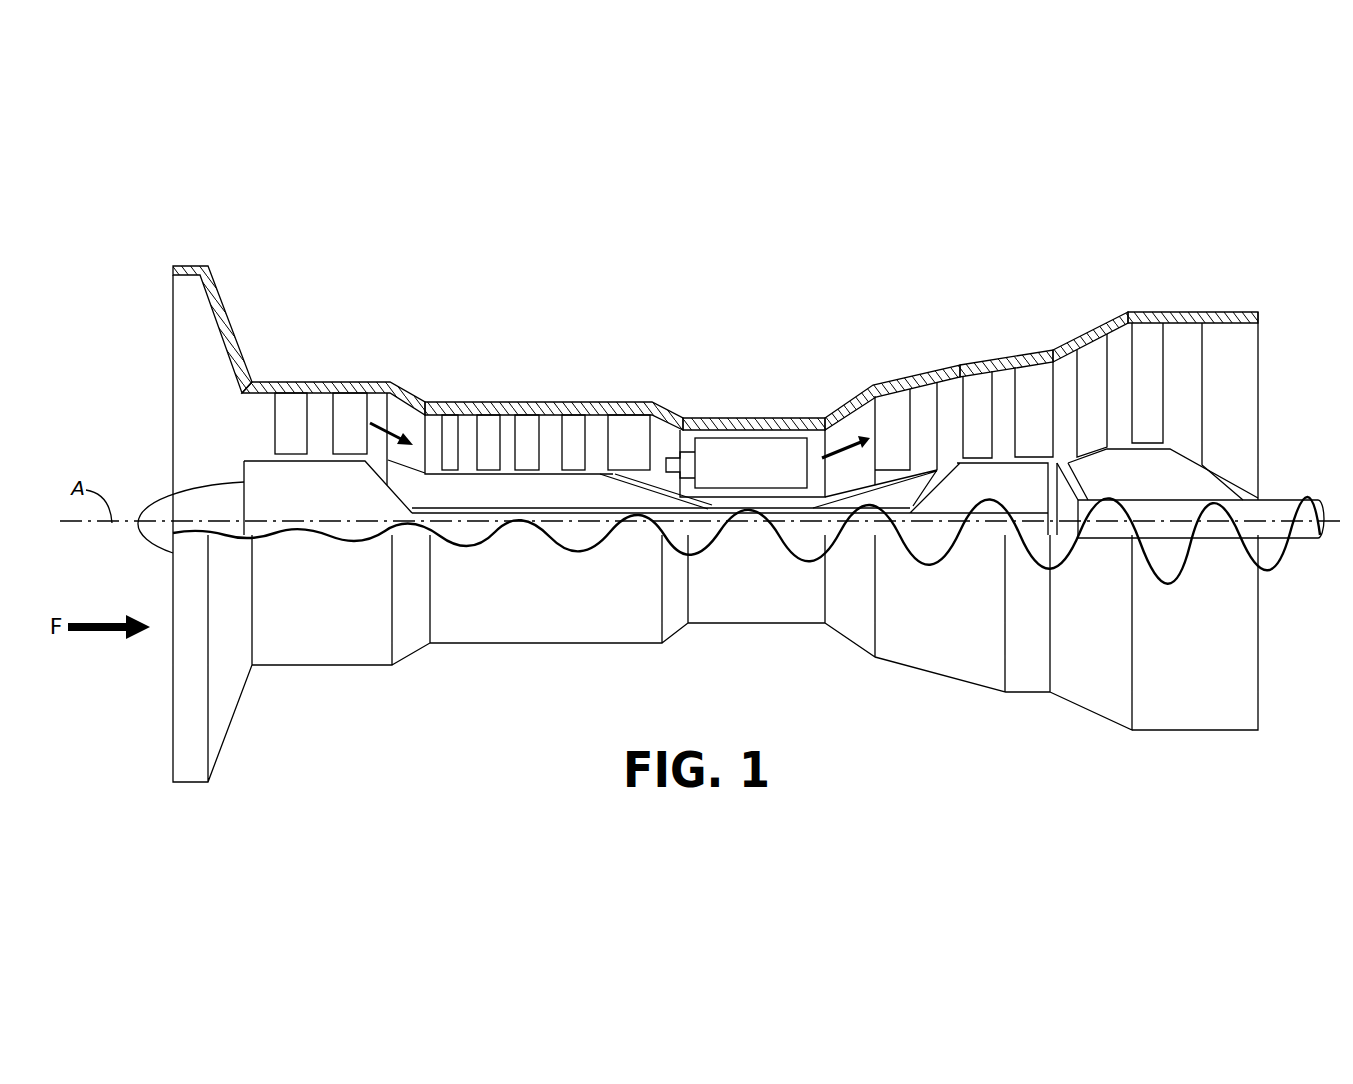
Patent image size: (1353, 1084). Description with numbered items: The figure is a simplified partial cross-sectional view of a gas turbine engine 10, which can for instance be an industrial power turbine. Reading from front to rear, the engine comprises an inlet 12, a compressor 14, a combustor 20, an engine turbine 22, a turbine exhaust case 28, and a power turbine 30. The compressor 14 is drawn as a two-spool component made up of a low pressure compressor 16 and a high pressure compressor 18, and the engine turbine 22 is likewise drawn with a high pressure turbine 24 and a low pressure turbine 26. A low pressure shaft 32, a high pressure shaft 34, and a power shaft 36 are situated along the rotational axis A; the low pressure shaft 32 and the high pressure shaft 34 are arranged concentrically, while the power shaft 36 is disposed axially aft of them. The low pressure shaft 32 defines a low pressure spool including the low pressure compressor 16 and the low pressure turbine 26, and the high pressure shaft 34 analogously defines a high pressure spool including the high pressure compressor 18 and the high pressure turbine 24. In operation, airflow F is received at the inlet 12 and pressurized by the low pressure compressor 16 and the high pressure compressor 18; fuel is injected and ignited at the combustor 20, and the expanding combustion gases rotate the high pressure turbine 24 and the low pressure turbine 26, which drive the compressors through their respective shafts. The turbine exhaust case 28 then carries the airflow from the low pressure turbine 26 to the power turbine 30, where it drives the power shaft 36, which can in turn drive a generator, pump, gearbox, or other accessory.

The gas turbine engine 10 is at (803, 224).
The inlet 12 is at (190, 382).
The compressor 14 is at (687, 273).
The low pressure compressor 16 is at (253, 367).
The high pressure compressor 18 is at (423, 387).
The combustor 20 is at (743, 467).
The engine turbine 22 is at (828, 252).
The high pressure turbine 24 is at (932, 370).
The low pressure turbine 26 is at (1042, 348).
The turbine exhaust case 28 is at (1047, 343).
The power turbine 30 is at (1258, 310).
The low pressure shaft 32 is at (690, 514).
The high pressure shaft 34 is at (797, 503).
The power shaft 36 is at (1280, 532).